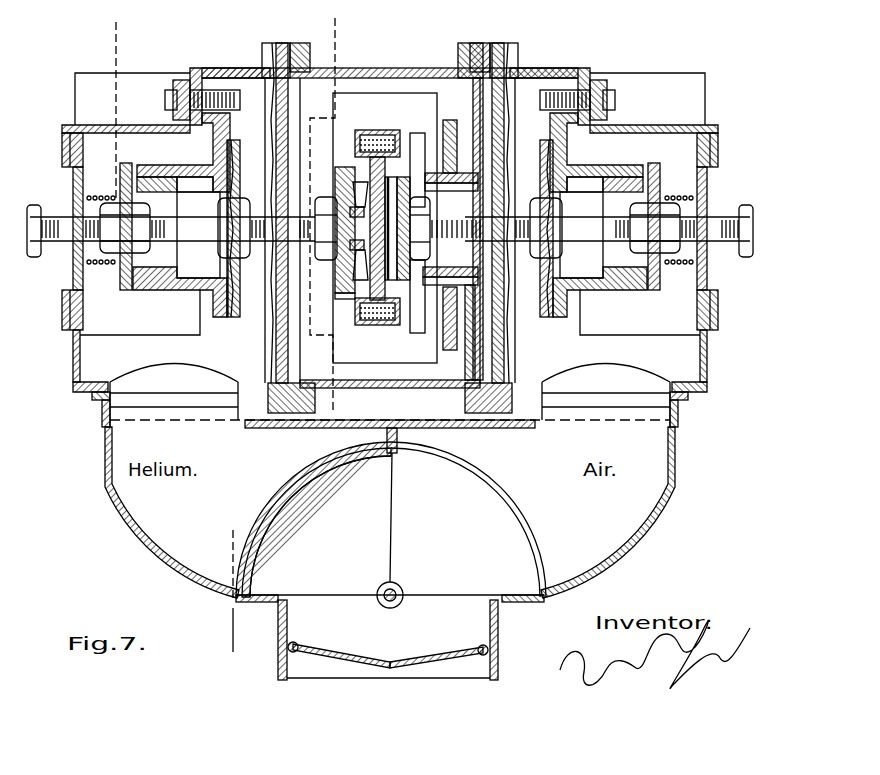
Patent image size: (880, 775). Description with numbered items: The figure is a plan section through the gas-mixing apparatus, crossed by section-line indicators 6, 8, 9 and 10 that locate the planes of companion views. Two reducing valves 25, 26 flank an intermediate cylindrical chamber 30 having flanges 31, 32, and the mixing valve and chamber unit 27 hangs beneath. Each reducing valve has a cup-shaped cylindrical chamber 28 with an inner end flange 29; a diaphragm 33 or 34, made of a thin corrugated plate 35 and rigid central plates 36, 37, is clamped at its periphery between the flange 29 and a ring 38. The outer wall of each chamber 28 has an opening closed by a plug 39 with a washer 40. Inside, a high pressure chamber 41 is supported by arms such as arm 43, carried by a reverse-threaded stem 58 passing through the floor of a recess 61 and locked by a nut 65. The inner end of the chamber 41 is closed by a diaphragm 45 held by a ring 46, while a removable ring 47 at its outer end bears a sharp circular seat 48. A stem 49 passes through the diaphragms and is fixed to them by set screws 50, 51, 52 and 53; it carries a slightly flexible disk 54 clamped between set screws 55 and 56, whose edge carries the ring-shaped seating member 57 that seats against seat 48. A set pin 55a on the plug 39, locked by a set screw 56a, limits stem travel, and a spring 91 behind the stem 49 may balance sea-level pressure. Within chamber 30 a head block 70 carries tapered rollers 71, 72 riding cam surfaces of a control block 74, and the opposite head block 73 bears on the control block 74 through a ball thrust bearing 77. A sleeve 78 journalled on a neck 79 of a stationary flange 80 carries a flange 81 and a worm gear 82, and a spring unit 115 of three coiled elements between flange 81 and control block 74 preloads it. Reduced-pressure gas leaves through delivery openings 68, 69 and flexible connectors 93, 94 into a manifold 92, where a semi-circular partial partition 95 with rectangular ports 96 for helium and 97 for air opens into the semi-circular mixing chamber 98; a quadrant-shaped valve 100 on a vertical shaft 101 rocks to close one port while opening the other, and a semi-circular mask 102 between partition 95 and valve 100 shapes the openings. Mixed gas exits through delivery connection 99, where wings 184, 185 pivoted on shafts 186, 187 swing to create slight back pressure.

The section line 6 is at (97, 44).
The section line 8 is at (318, 37).
The section line 9 is at (358, 362).
The section line 10 is at (353, 345).
The reducing valve 25 is at (653, 66).
The reducing valve 26 is at (165, 64).
The mixing valve and chamber unit 27 is at (107, 531).
The cylindrical chamber 28 is at (197, 68).
The inner end flange 29 is at (273, 60).
The intermediate cylindrical chamber 30 is at (371, 60).
The flange 31 is at (467, 43).
The flange 32 is at (300, 45).
The diaphragm 33 is at (263, 95).
The diaphragm 34 is at (515, 95).
The thin flexible corrugated plate 35 is at (290, 93).
The rigid central plate 36 is at (270, 318).
The rigid central plate 37 is at (290, 110).
The ring 38 is at (282, 43).
The plug 39 is at (74, 178).
The washer 40 is at (68, 130).
The high pressure chamber 41 is at (160, 165).
The arm 43 is at (215, 140).
The diaphragm 45 is at (226, 186).
The ring 46 is at (240, 155).
The removable ring 47 is at (155, 178).
The circular ridge or seat 48 is at (140, 290).
The stem 49 is at (190, 236).
The set screw 50 is at (278, 195).
The set screw 51 is at (295, 200).
The set screw 52 is at (240, 280).
The set screw 53 is at (225, 210).
The slightly flexible disk 54 is at (118, 198).
The set screw 55 is at (135, 210).
The set pin or stop 55a is at (68, 245).
The set screw 56 is at (113, 264).
The set screw 56a is at (58, 200).
The ring shaped seating member 57 is at (126, 165).
The stem 58 is at (168, 92).
The recess 61 is at (90, 98).
The lock screw or nut 65 is at (182, 80).
The delivery opening 68 is at (140, 372).
The delivery opening 69 is at (615, 375).
The head block 70 is at (345, 272).
The tapered roller 71 is at (352, 190).
The tapered roller 72 is at (345, 298).
The head block 73 is at (430, 205).
The control block 74 is at (395, 300).
The ball thrust bearing 77 is at (417, 133).
The sleeve 78 is at (450, 120).
The neck 79 is at (460, 270).
The flange 80 is at (455, 85).
The flange 81 is at (380, 325).
The worm gear 82 is at (450, 350).
The spring 91 is at (95, 268).
The manifold 92 is at (165, 580).
The flexible connector 93 is at (98, 398).
The flexible connector 94 is at (690, 400).
The semi-circular partial partition 95 is at (299, 461).
The rectangular port 96 is at (280, 486).
The rectangular port 97 is at (492, 480).
The mixing chamber 98 is at (415, 517).
The delivery connection 99 is at (492, 617).
The quadrant shaped valve 100 is at (292, 503).
The vertical shaft 101 is at (383, 608).
The semi-circular mask 102 is at (400, 450).
The spring unit 115 is at (378, 135).
The wing 184 is at (345, 660).
The wing 185 is at (418, 665).
The shaft 186 is at (287, 656).
The shaft 187 is at (490, 651).